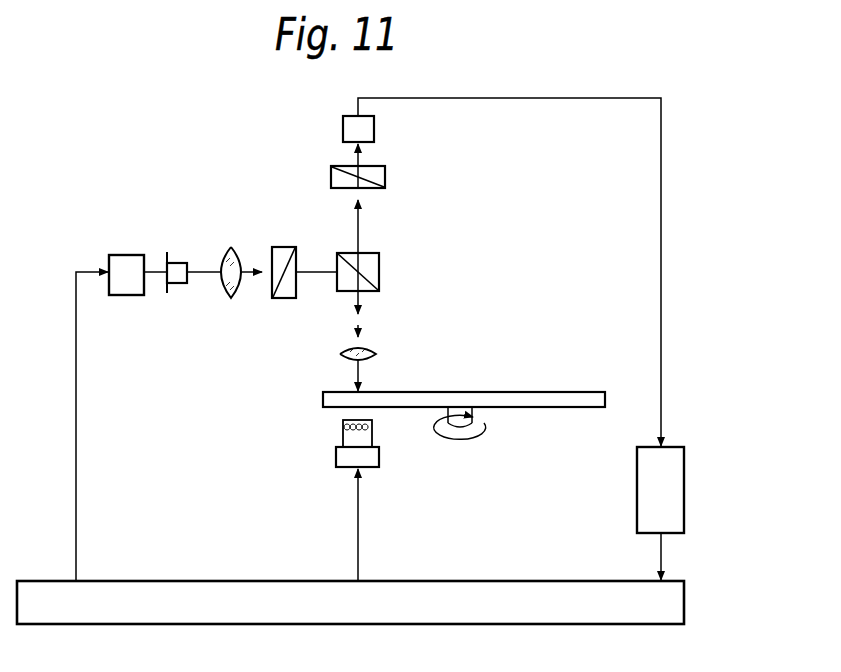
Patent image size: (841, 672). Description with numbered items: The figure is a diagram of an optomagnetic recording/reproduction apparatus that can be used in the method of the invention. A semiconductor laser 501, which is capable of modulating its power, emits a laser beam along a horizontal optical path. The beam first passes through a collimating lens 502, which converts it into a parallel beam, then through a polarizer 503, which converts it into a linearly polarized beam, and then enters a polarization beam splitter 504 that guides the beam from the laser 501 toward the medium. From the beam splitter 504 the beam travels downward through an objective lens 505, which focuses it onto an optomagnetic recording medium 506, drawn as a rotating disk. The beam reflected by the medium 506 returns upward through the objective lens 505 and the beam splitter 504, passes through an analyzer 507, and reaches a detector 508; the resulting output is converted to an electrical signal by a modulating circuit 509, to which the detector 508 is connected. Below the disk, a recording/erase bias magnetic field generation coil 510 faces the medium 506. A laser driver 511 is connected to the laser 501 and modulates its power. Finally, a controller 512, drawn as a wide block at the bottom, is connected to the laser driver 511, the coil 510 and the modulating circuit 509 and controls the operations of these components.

The semiconductor laser 501 is at (175, 284).
The collimating lens 502 is at (228, 299).
The polarizer 503 is at (282, 299).
The polarization beam splitter 504 is at (379, 262).
The objective lens 505 is at (372, 350).
The optomagnetic recording medium 506 is at (546, 392).
The analyzer 507 is at (385, 167).
The detector 508 is at (374, 117).
The modulating circuit 509 is at (637, 484).
The recording/erase bias magnetic field generation coil 510 is at (379, 458).
The laser driver 511 is at (123, 296).
The controller 512 is at (192, 566).